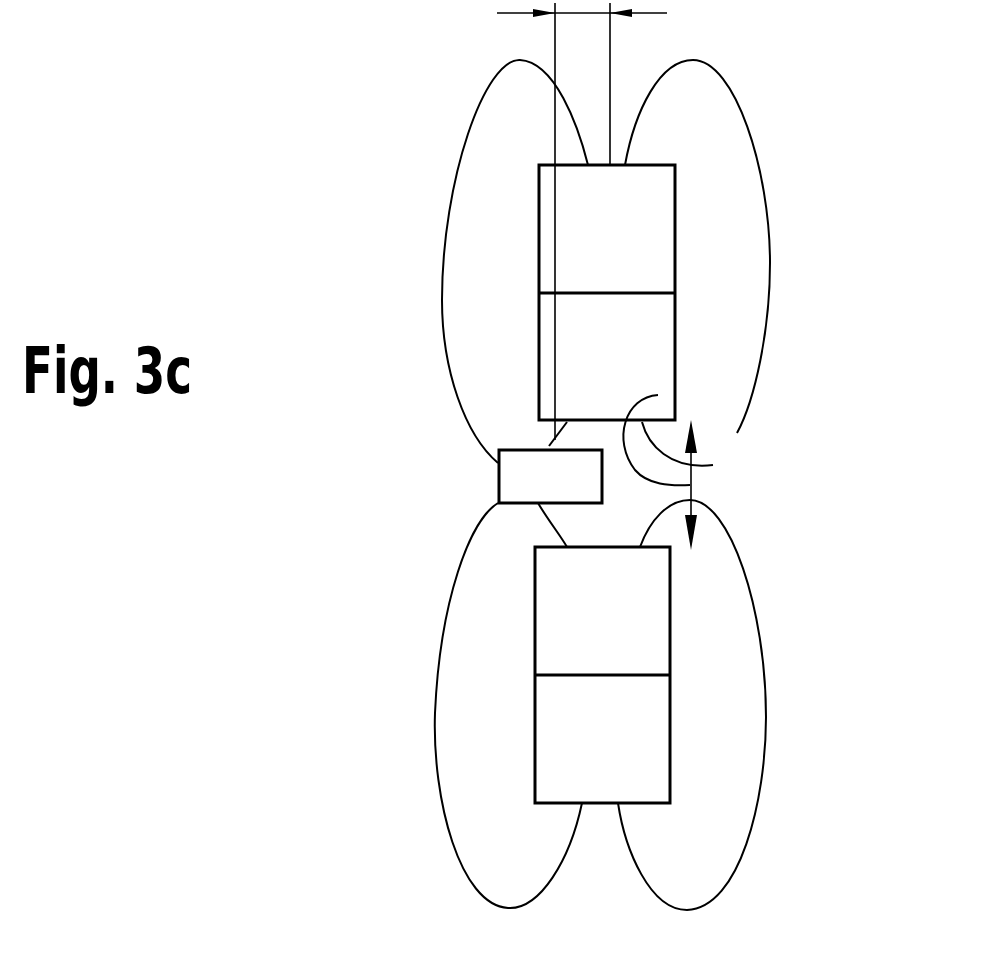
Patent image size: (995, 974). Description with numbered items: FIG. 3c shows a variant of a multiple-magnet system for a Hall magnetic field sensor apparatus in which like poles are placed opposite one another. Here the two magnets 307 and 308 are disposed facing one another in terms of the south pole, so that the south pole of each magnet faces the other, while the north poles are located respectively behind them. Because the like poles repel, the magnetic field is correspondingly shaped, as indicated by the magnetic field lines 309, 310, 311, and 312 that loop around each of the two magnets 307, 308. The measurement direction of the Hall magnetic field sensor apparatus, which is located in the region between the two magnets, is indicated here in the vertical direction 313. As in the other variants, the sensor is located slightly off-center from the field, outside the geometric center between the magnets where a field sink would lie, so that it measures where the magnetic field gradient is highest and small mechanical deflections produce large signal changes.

The magnet 307 is at (675, 275).
The magnet 308 is at (670, 655).
The magnetic field line 309 is at (457, 565).
The magnetic field line 310 is at (450, 170).
The magnetic field line 311 is at (763, 170).
The magnetic field line 312 is at (750, 570).
The vertical direction 313 is at (658, 395).